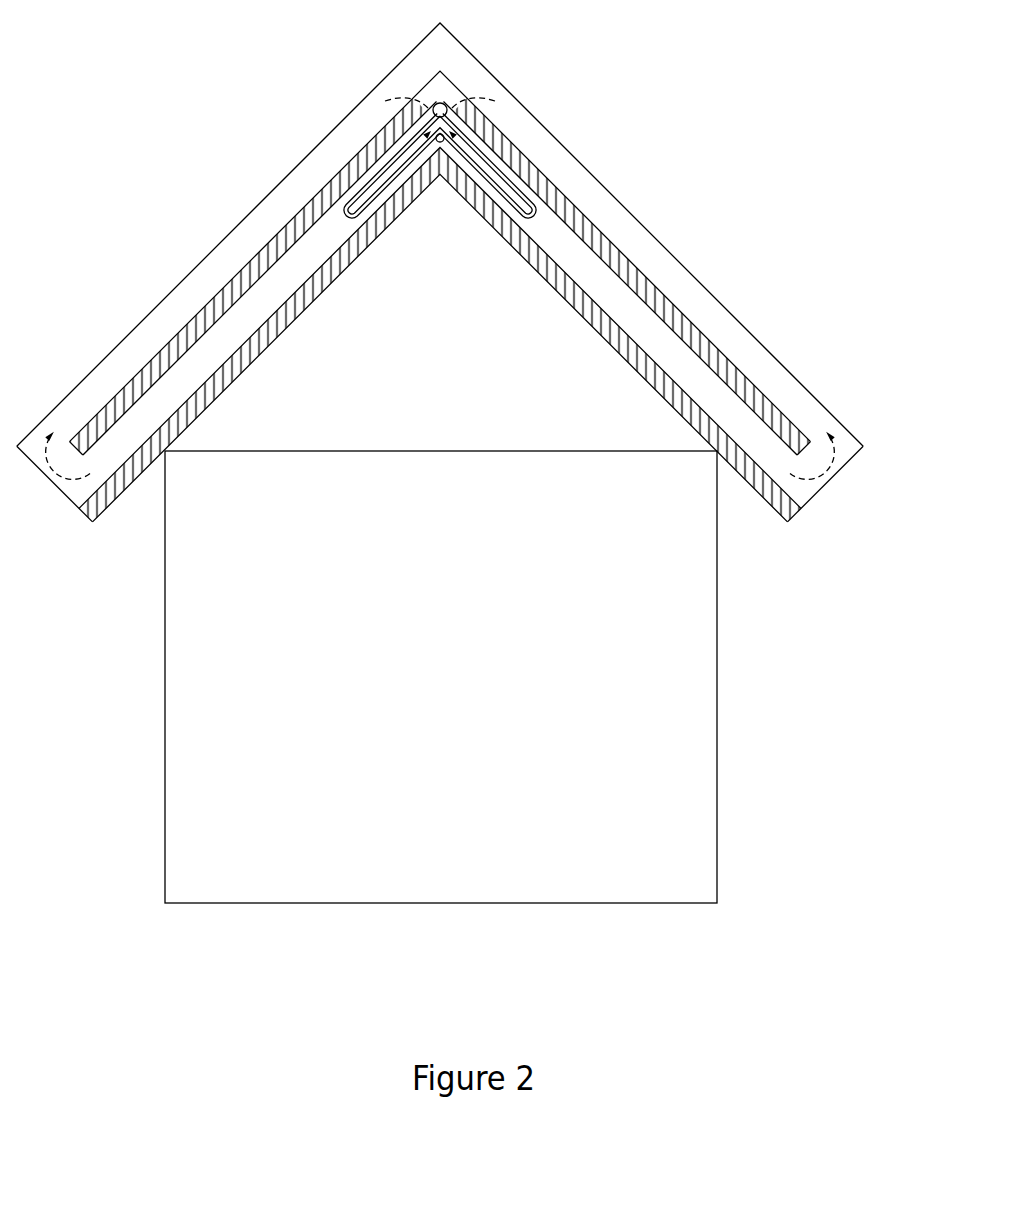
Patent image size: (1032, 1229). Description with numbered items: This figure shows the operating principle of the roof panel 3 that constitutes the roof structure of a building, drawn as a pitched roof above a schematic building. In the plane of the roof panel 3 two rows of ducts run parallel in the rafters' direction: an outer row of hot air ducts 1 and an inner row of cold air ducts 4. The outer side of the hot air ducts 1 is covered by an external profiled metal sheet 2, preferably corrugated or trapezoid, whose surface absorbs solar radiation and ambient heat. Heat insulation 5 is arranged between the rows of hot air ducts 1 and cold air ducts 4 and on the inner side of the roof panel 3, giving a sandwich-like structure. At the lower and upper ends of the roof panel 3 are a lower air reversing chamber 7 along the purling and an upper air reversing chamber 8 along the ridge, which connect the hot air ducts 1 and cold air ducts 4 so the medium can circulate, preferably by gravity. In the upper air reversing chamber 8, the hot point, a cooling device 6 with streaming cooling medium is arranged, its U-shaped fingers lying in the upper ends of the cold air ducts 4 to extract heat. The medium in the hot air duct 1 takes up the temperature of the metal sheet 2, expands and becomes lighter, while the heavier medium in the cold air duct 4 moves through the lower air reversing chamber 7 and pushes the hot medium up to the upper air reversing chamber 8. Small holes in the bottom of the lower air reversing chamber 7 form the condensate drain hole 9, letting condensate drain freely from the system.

The hot air duct 1 is at (637, 250).
The metal sheet 2 is at (603, 185).
The roof panel 3 is at (223, 233).
The cold air duct 4 is at (737, 419).
The heat insulation 5 is at (705, 325).
The cooling device 6 is at (437, 104).
The lower air reversing chamber 7 is at (833, 470).
The upper air reversing chamber 8 is at (463, 100).
The condensate drain hole 9 is at (810, 500).